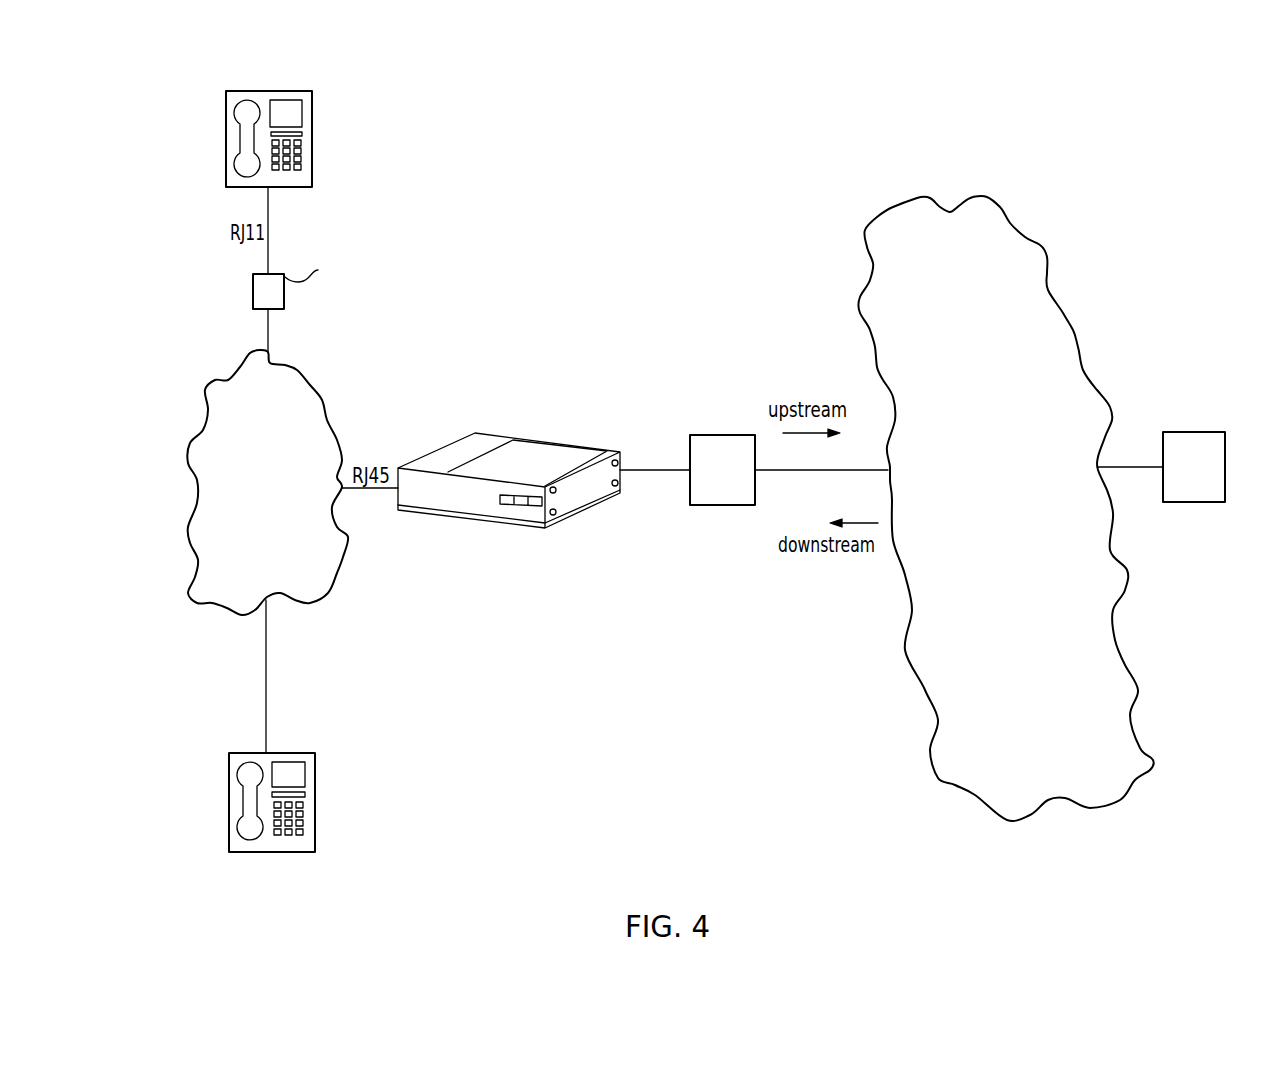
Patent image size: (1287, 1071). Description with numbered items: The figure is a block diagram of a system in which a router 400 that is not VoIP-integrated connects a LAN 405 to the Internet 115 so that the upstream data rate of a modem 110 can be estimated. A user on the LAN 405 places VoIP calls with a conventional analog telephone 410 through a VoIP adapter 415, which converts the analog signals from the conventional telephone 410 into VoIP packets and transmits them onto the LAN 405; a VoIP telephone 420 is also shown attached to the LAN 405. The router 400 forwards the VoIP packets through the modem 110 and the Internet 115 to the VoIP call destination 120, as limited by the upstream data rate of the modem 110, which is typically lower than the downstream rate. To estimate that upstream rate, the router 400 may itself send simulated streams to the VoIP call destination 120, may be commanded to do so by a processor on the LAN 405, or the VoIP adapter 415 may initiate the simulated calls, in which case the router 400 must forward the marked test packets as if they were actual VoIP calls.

The conventional analog telephone 410 is at (226, 101).
The VoIP adapter 415 is at (253, 289).
The LAN 405 is at (277, 518).
The router 400 is at (560, 442).
The modem 110 is at (728, 433).
The Internet 115 is at (1015, 567).
The VoIP call destination 120 is at (1210, 481).
The VoIP telephone 420 is at (315, 817).